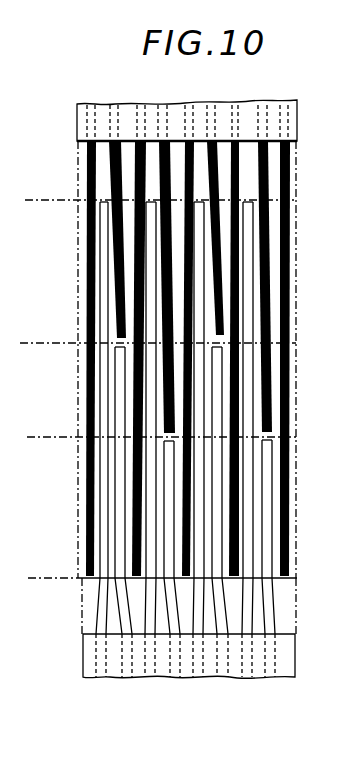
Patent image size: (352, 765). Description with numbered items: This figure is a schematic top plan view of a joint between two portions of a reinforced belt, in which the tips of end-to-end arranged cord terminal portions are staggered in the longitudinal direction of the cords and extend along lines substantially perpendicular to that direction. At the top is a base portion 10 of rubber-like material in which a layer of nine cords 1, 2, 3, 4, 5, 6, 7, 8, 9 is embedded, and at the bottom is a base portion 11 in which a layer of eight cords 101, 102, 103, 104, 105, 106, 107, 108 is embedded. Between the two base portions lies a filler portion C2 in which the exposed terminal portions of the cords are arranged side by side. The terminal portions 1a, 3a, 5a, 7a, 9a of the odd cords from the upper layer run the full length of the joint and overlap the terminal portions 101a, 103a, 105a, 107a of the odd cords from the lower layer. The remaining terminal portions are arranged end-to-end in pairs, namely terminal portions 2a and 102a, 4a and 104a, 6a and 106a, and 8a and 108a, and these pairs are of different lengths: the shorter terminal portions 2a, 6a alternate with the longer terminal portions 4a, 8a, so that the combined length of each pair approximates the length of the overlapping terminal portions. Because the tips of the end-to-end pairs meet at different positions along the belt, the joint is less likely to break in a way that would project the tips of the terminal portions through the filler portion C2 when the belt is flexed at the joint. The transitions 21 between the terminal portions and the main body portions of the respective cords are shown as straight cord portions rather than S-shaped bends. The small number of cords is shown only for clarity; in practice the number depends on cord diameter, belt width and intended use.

The base portion 10 is at (297, 105).
The base portion 11 is at (290, 650).
The transitions 21 is at (117, 157).
The filler portion C2 is at (302, 150).
The cord 1 is at (92, 104).
The cord 2 is at (113, 104).
The cord 3 is at (140, 104).
The cord 4 is at (163, 104).
The cord 5 is at (189, 104).
The cord 6 is at (211, 104).
The cord 7 is at (235, 104).
The cord 8 is at (262, 104).
The cord 9 is at (284, 104).
The terminal portion 1a is at (93, 219).
The terminal portion 2a is at (124, 242).
The terminal portion 3a is at (134, 258).
The terminal portion 4a is at (165, 273).
The terminal portion 5a is at (190, 283).
The terminal portion 6a is at (221, 322).
The terminal portion 7a is at (234, 352).
The terminal portion 8a is at (268, 378).
The terminal portion 9a is at (284, 402).
The cord 101 is at (102, 680).
The cord 102 is at (124, 680).
The cord 103 is at (151, 680).
The cord 104 is at (174, 680).
The cord 105 is at (199, 680).
The cord 106 is at (224, 680).
The cord 107 is at (248, 680).
The cord 108 is at (270, 680).
The terminal portion 101a is at (101, 360).
The terminal portion 102a is at (117, 381).
The terminal portion 103a is at (158, 397).
The terminal portion 104a is at (173, 470).
The terminal portion 105a is at (203, 418).
The terminal portion 106a is at (221, 450).
The terminal portion 107a is at (251, 475).
The terminal portion 108a is at (266, 517).